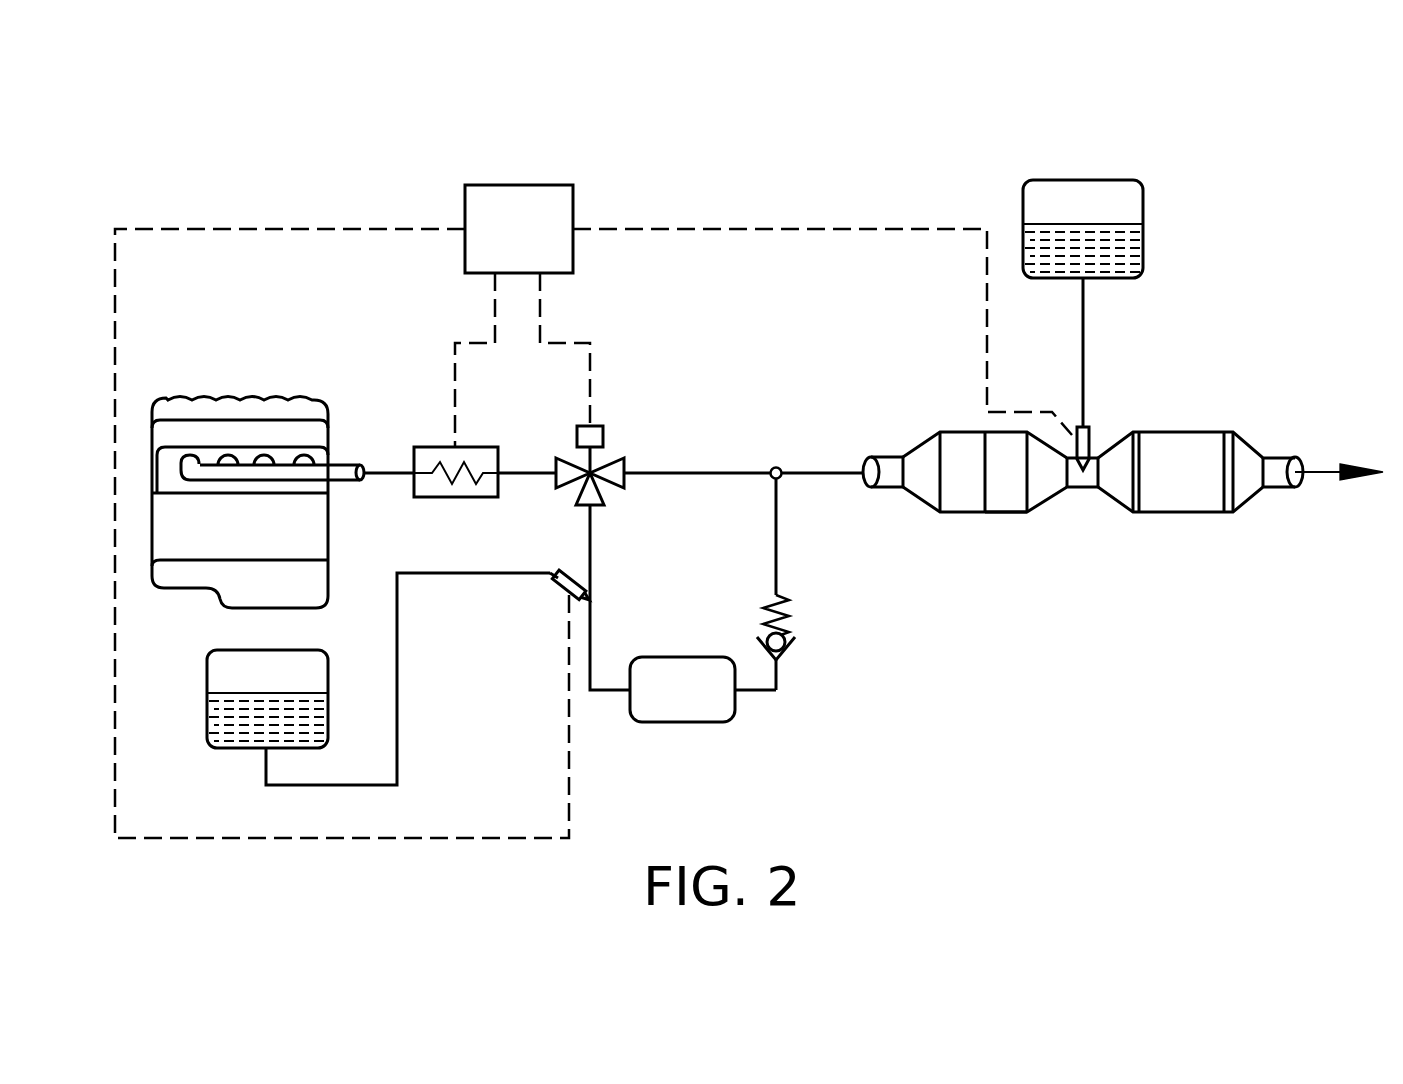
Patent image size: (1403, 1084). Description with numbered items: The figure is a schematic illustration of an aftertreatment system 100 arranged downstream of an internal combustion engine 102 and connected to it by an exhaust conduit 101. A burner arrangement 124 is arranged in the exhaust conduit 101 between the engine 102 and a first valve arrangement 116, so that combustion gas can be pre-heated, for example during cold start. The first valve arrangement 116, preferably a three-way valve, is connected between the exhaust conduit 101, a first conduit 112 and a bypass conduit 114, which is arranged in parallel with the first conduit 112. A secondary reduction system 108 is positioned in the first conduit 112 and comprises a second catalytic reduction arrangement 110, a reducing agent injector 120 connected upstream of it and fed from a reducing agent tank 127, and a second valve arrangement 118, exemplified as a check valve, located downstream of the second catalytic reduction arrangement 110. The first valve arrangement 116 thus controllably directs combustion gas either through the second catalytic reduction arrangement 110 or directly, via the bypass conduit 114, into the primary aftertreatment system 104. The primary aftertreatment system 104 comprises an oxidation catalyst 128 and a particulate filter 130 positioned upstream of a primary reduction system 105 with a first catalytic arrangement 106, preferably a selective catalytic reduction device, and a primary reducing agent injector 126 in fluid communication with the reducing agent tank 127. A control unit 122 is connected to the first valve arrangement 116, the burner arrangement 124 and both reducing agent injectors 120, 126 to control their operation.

The aftertreatment system 100 is at (1268, 155).
The exhaust conduit 101 is at (380, 470).
The internal combustion engine 102 is at (237, 437).
The primary aftertreatment system 104 is at (1208, 403).
The primary reduction system 105 is at (1225, 327).
The first catalytic arrangement 106 is at (1185, 512).
The secondary reduction system 108 is at (854, 665).
The second catalytic reduction arrangement 110 is at (683, 722).
The first conduit 112 is at (590, 645).
The bypass conduit 114 is at (700, 472).
The first valve arrangement 116 is at (630, 428).
The second valve arrangement 118 is at (818, 589).
The reducing agent injector 120 is at (555, 583).
The control unit 122 is at (513, 185).
The burner arrangement 124 is at (430, 447).
The primary reducing agent injector 126 is at (1090, 440).
The reducing agent tank 127 is at (1085, 180).
The oxidation catalyst 128 is at (970, 512).
The particulate filter 130 is at (1005, 512).